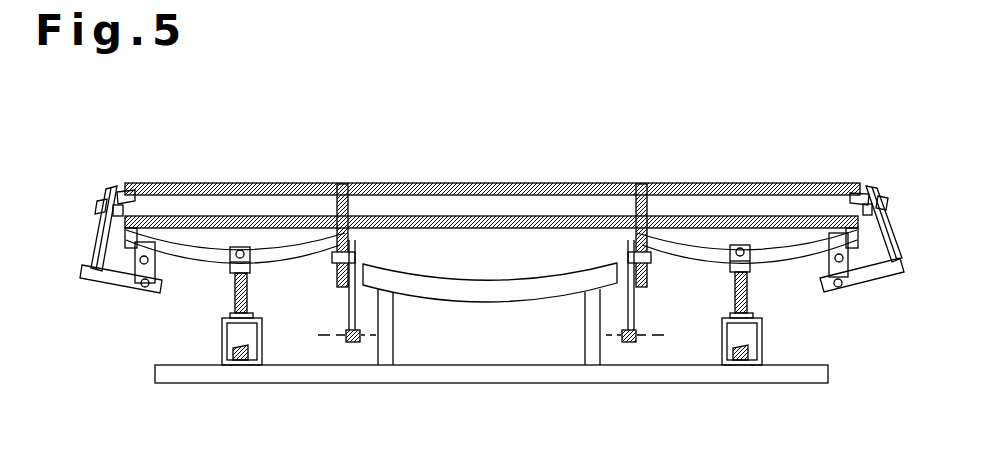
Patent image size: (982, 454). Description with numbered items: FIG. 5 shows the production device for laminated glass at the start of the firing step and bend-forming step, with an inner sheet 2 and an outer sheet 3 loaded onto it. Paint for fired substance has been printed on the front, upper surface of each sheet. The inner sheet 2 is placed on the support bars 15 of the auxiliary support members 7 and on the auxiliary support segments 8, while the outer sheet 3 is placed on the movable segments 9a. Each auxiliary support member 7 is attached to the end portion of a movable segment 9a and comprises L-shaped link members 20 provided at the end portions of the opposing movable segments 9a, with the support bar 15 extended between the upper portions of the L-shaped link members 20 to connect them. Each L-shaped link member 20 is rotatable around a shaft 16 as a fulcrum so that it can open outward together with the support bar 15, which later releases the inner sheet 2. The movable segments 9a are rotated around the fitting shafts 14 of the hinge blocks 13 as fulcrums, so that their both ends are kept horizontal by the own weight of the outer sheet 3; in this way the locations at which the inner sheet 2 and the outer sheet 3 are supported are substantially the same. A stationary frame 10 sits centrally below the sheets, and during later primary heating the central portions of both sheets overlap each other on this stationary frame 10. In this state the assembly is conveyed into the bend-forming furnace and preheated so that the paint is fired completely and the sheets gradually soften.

The inner sheet 2 is at (745, 182).
The outer sheet 3 is at (543, 217).
The auxiliary support member 7 is at (102, 186).
The auxiliary support segment 8 is at (352, 183).
The movable segment 9a is at (290, 248).
The stationary frame 10 is at (480, 292).
The hinge block 13 is at (218, 358).
The fitting shaft 14 is at (231, 258).
The support bar 15 is at (131, 191).
The shaft 16 is at (124, 287).
The L-shaped link member 20 is at (96, 252).